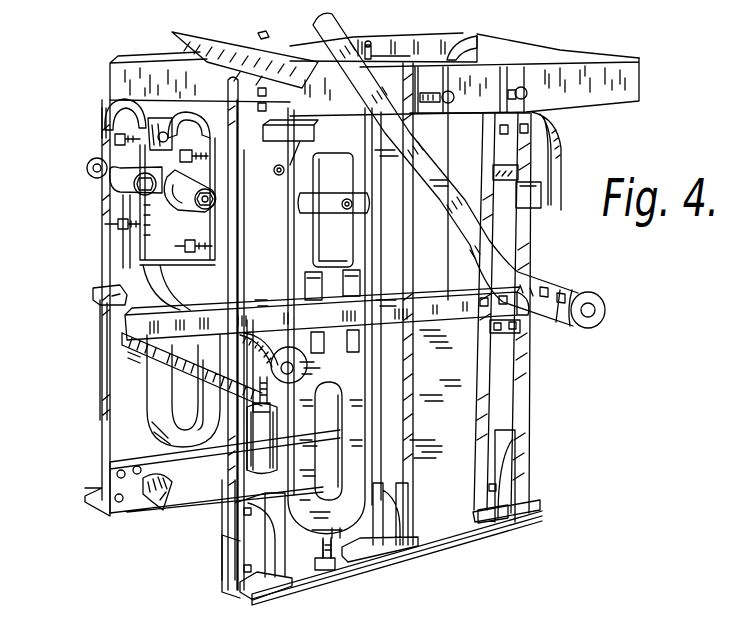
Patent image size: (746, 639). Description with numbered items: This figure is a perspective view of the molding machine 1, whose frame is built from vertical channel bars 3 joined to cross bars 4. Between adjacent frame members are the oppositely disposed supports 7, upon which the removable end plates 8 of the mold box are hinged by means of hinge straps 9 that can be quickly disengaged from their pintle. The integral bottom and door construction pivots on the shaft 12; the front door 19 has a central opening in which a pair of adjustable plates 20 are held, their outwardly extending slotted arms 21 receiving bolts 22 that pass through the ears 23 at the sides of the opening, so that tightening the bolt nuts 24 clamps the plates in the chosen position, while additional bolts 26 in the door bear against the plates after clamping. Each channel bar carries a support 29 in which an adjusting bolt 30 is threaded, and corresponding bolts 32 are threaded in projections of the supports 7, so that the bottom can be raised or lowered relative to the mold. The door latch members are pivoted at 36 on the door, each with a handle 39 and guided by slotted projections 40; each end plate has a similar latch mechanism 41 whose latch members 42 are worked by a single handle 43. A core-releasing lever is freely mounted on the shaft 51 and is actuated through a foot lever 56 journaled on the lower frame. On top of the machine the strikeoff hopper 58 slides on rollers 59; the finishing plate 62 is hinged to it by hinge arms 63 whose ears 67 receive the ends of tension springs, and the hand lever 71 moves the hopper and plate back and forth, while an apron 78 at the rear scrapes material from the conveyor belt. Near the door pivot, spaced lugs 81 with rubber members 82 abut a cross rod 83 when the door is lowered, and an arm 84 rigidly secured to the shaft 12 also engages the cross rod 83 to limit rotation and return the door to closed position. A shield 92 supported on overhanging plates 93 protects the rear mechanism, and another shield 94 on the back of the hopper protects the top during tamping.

The molding machine 1 is at (543, 379).
The vertical channel bars 3 is at (527, 415).
The cross bars 4 is at (135, 63).
The supports 7 is at (365, 417).
The removable end plates 8 is at (367, 255).
The hinge straps 9 is at (355, 284).
The shaft 12 is at (122, 308).
The door 19 is at (137, 260).
The adjustable plates 20 is at (173, 170).
The slotted arms 21 is at (110, 177).
The bolts 22 is at (110, 200).
The ears 23 is at (200, 215).
The bolt nuts 24 is at (215, 205).
The bolts 26 is at (107, 225).
The support 29 is at (248, 460).
The adjusting bolt 30 is at (285, 390).
The bolts 32 is at (312, 565).
The pivot 36 is at (163, 130).
The handle 39 is at (117, 97).
The slotted projections 40 is at (113, 127).
The latch mechanism 41 is at (314, 134).
The latch members 42 is at (375, 34).
The handle 43 is at (285, 170).
The shaft 51 is at (445, 318).
The foot lever 56 is at (153, 500).
The strikeoff hopper 58 is at (467, 34).
The rollers 59 is at (428, 104).
The finishing plate 62 is at (203, 38).
The hinge arms 63 is at (312, 37).
The ear 67 is at (264, 36).
The hand lever 71 is at (453, 173).
The apron 78 is at (432, 34).
The lugs 81 is at (93, 293).
The rubber members 82 is at (118, 303).
The cross rod 83 is at (143, 348).
The arm 84 is at (123, 337).
The shield 92 is at (561, 155).
The overhanging plates 93 is at (541, 180).
The shield 94 is at (639, 78).